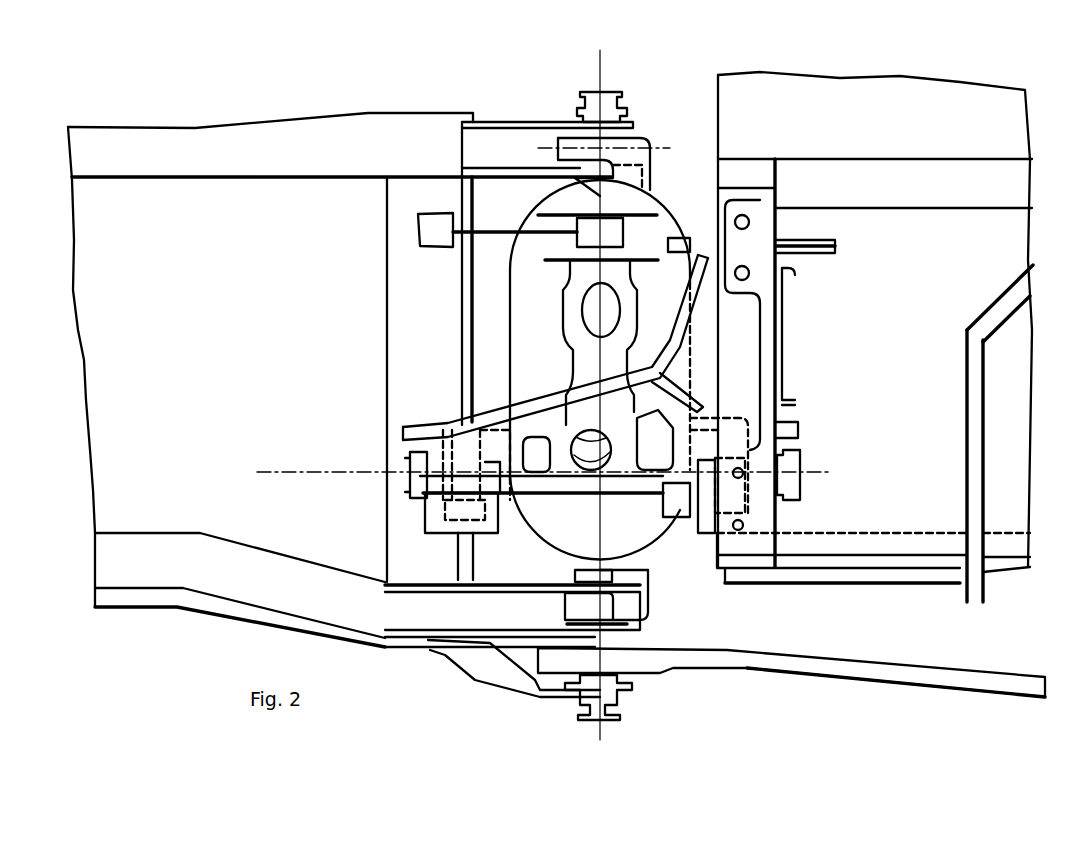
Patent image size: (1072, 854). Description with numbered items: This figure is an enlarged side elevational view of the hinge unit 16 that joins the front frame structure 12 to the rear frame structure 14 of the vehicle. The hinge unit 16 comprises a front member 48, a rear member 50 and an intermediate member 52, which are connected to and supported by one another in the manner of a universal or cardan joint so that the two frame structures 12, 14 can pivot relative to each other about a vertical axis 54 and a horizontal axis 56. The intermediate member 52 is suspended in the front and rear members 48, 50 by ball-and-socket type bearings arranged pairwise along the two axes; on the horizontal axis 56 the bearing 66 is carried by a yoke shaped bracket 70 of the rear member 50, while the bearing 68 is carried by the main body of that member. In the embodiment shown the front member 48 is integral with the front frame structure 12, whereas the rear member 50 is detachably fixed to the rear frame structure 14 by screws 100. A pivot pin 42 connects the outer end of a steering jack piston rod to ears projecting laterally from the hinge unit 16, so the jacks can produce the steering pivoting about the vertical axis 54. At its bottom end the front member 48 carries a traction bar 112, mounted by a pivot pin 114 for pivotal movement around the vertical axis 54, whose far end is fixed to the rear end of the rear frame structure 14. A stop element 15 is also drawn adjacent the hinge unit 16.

The front frame structure 12 is at (200, 434).
The rear frame structure 14 is at (920, 438).
The stop block 15 is at (680, 240).
The hinge unit 16 is at (690, 139).
The pivot pin 42 is at (555, 206).
The front member 48 is at (500, 135).
The rear member 50 is at (757, 347).
The intermediate member 52 is at (510, 303).
The vertical axis 54 is at (600, 70).
The horizontal axis 56 is at (320, 475).
The bearing 66 is at (455, 505).
The bearing 68 is at (742, 495).
The yoke shaped bracket 70 is at (555, 415).
The screws 100 is at (749, 222).
The traction bar 112 is at (928, 675).
The pivot pin 114 is at (622, 720).